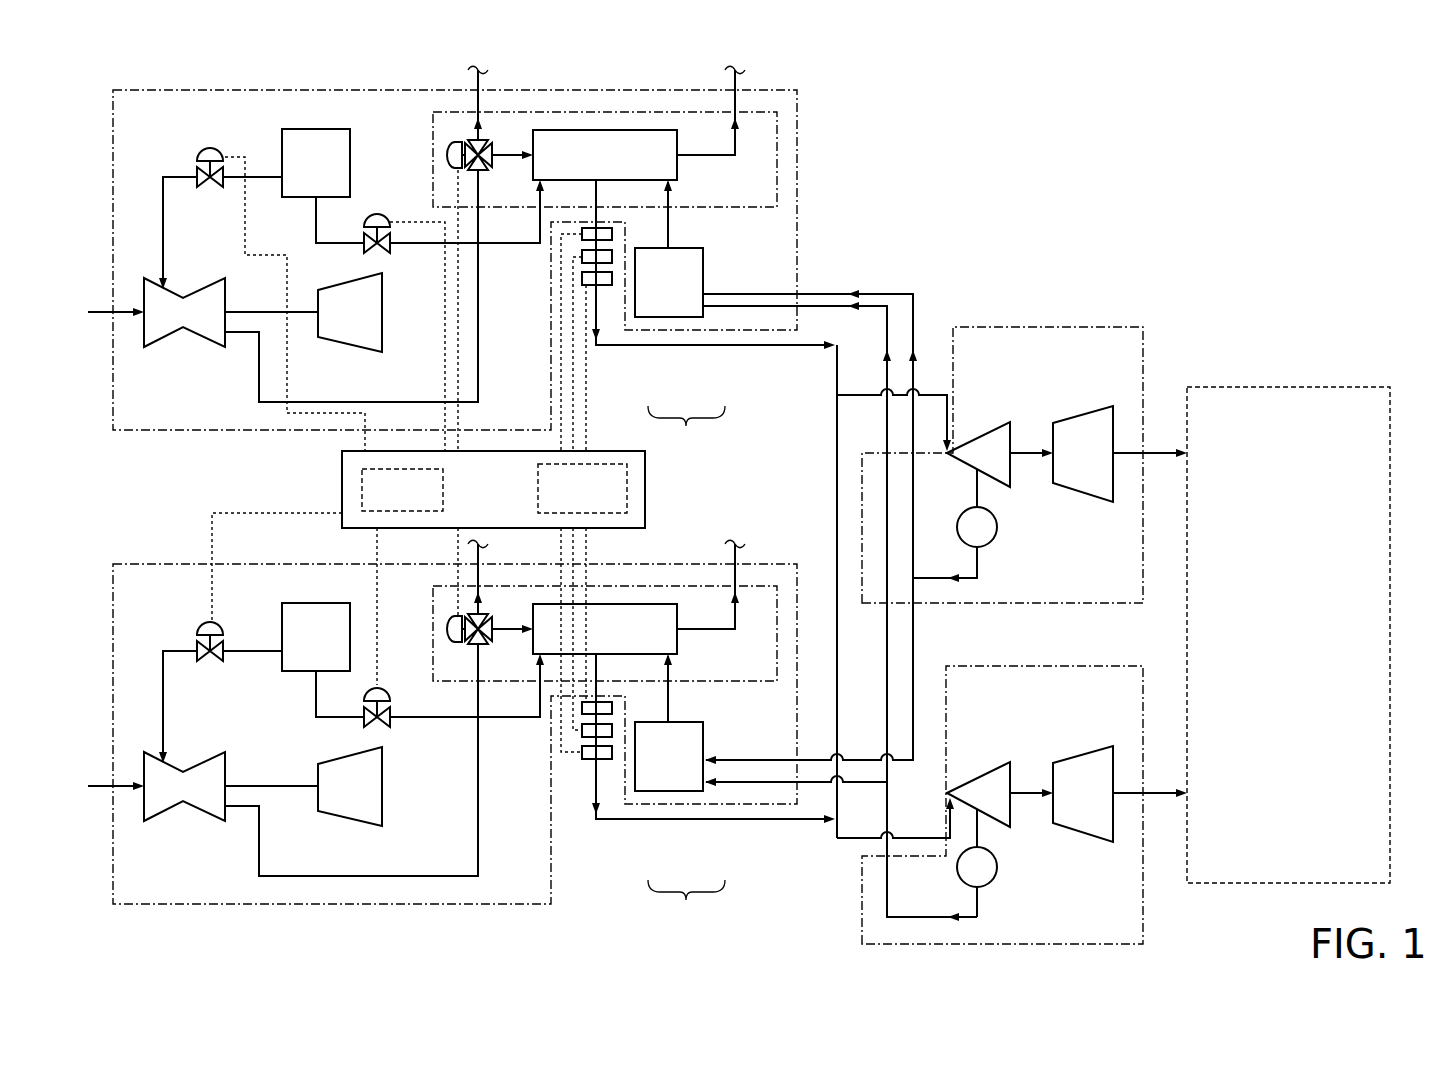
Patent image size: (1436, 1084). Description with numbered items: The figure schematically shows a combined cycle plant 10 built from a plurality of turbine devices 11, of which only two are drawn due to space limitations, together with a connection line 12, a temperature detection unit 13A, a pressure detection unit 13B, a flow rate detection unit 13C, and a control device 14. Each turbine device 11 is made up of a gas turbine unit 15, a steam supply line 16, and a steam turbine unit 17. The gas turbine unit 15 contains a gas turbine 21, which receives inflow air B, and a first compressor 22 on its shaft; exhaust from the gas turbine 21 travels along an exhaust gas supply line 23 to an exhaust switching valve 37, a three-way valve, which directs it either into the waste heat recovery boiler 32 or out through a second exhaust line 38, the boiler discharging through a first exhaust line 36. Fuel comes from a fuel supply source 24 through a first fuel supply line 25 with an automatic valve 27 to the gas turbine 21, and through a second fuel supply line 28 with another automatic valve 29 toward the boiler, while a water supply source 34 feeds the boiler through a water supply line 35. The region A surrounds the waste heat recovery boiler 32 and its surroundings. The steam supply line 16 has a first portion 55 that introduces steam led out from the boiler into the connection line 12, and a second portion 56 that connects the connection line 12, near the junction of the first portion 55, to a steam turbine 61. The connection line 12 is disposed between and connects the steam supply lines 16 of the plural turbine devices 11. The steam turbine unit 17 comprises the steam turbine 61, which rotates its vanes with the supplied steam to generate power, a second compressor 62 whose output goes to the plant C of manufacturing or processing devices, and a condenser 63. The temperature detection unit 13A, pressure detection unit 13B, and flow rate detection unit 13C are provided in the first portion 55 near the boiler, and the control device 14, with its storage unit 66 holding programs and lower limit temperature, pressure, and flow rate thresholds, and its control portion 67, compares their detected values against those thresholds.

The combined cycle plant 10 is at (1347, 90).
The turbine device 11 is at (972, 262).
The connection line 12 is at (835, 460).
The temperature detection unit 13A is at (597, 232).
The pressure detection unit 13B is at (603, 258).
The flow rate detection unit 13C is at (588, 280).
The control device 14 is at (336, 466).
The gas turbine unit 15 is at (797, 127).
The steam supply line 16 is at (686, 667).
The steam turbine unit 17 is at (1048, 327).
The gas turbine 21 is at (170, 345).
The first compressor 22 is at (345, 352).
The exhaust gas supply line 23 is at (259, 380).
The fuel supply source 24 is at (305, 128).
The first fuel supply line 25 is at (176, 177).
The automatic valve 27 is at (212, 148).
The second fuel supply line 28 is at (316, 222).
The automatic valve 29 is at (377, 210).
The waste heat recovery boiler 32 is at (677, 170).
The water supply source 34 is at (703, 270).
The water supply line 35 is at (668, 225).
The first exhaust line 36 is at (740, 98).
The exhaust switching valve 37 is at (452, 150).
The second exhaust line 38 is at (477, 96).
The first portion 55 is at (600, 312).
The second portion 56 is at (858, 392).
The steam turbine 61 is at (987, 432).
The second compressor 62 is at (1085, 410).
The condenser 63 is at (997, 527).
The storage unit 66 is at (362, 488).
The control portion 67 is at (627, 490).
The region A is at (777, 162).
The inflow air B is at (103, 549).
The plant C is at (1290, 387).